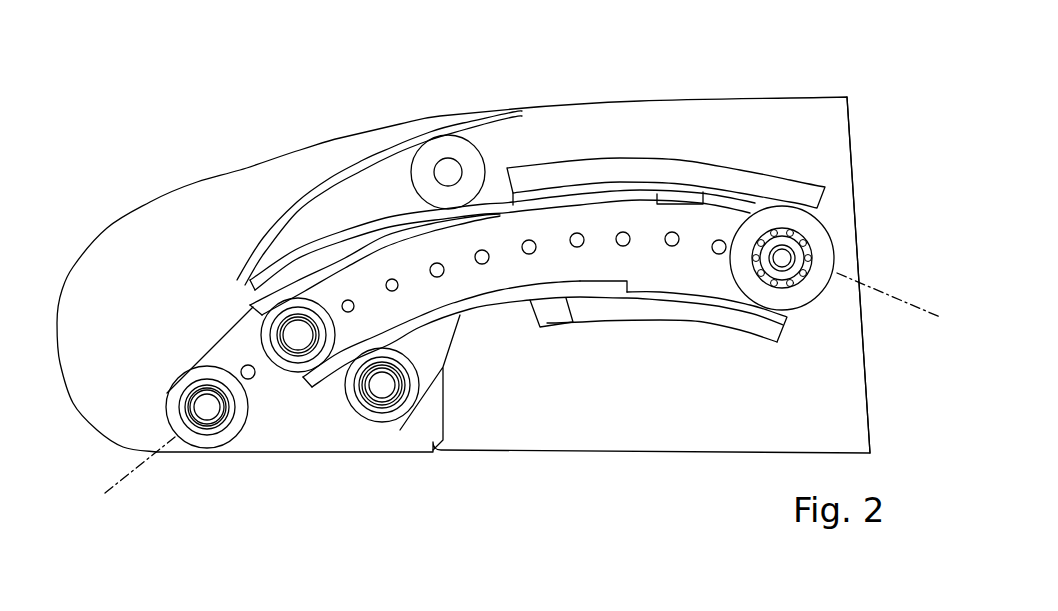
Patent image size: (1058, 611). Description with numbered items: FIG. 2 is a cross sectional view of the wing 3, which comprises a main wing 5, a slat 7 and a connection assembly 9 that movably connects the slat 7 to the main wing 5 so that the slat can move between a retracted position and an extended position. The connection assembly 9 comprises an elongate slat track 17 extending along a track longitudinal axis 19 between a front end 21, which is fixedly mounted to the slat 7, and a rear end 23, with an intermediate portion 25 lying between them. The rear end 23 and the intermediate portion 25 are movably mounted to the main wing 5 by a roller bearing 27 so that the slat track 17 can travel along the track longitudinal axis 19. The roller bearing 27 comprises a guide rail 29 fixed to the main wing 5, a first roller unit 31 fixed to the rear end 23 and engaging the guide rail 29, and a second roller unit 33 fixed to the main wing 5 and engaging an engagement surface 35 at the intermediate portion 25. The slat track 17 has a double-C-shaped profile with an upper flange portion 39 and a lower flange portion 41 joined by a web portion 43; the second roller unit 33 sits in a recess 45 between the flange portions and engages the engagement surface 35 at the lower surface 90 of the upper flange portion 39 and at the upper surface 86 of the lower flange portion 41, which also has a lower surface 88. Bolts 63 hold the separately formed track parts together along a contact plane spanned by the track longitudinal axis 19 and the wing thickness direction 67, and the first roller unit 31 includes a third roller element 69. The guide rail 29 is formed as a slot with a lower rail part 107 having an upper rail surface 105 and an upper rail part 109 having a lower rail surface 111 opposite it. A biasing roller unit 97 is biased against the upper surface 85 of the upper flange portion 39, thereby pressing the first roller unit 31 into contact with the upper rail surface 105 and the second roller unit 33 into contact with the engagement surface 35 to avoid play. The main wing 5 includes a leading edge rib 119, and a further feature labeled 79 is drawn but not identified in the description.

The wing 3 is at (122, 163).
The main wing 5 is at (742, 392).
The slat 7 is at (133, 319).
The connection assembly 9 is at (666, 135).
The slat track 17 is at (455, 230).
The track longitudinal axis 19 is at (923, 318).
The front end 21 is at (305, 415).
The rear end 23 is at (753, 207).
The intermediate portion 25 is at (503, 280).
The roller bearing 27 is at (579, 237).
The guide rail 29 is at (712, 172).
The first roller unit 31 is at (834, 294).
The second roller unit 33 is at (298, 300).
The engagement surface 35 is at (464, 128).
The upper flange portion 39 is at (392, 279).
The lower flange portion 41 is at (567, 283).
The web portion 43 is at (548, 323).
The recess 45 is at (594, 256).
The bolts 63 is at (363, 317).
The wing thickness direction 67 is at (830, 88).
The third roller element 69 is at (820, 247).
The blade edge 79 is at (790, 336).
The upper surface 85 is at (418, 313).
The upper surface 86 is at (392, 279).
The lower surface 88 is at (420, 296).
The lower surface 90 is at (368, 405).
The biasing roller unit 97 is at (453, 147).
The upper rail surface 105 is at (647, 288).
The lower rail part 107 is at (551, 388).
The upper rail part 109 is at (627, 160).
The lower rail surface 111 is at (733, 198).
The leading edge rib 119 is at (827, 148).